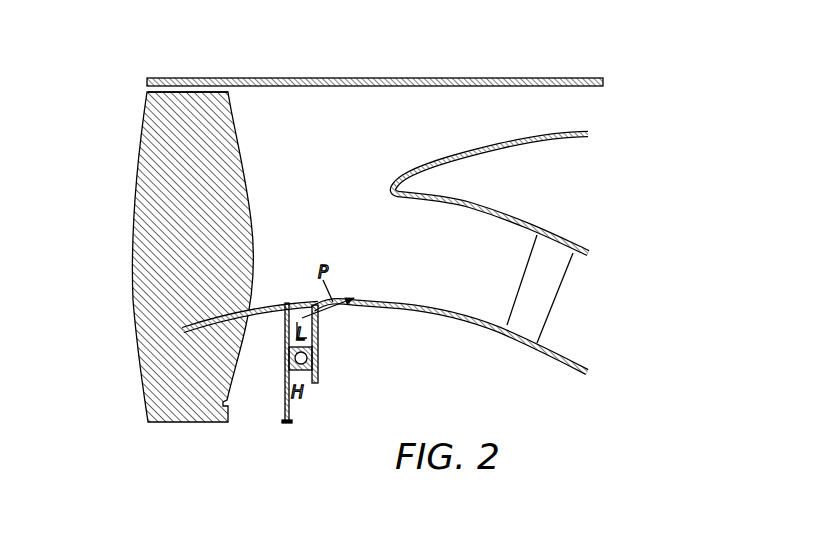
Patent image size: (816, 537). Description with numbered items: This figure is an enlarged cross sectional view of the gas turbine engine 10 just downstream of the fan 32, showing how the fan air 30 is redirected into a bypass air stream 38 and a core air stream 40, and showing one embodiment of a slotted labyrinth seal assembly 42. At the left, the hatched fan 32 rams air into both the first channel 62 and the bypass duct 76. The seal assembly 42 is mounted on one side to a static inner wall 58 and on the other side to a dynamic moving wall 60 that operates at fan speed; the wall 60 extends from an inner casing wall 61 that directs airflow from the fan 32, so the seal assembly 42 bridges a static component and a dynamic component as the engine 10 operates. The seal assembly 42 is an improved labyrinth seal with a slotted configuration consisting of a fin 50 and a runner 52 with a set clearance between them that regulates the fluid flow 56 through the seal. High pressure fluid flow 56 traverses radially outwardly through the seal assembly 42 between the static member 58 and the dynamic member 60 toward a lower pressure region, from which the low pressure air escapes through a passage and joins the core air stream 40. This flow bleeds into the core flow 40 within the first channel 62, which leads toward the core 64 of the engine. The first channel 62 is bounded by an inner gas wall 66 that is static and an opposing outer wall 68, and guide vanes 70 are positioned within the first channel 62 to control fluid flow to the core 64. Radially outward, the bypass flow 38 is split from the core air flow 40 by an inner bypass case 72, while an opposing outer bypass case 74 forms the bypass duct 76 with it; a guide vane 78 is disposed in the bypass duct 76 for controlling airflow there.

The gas turbine engine 10 is at (165, 257).
The fan air 30 is at (192, 208).
The fan 32 is at (235, 120).
The bypass air stream 38 is at (230, 200).
The core air stream 40 is at (232, 222).
The seal assembly 42 is at (322, 360).
The fin 50 is at (297, 390).
The runner 52 is at (288, 360).
The fluid flow 56 is at (300, 400).
The static inner wall 58 is at (365, 311).
The dynamic moving wall 60 is at (283, 416).
The inner casing wall 61 is at (195, 324).
The first channel 62 is at (474, 255).
The core 64 is at (599, 319).
The inner gas wall 66 is at (568, 376).
The outer wall 68 is at (458, 195).
The guide vanes 70 is at (550, 256).
The inner bypass case 72 is at (490, 193).
The outer bypass case 74 is at (435, 162).
The bypass duct 76 is at (600, 120).
The guide vane 78 is at (494, 125).